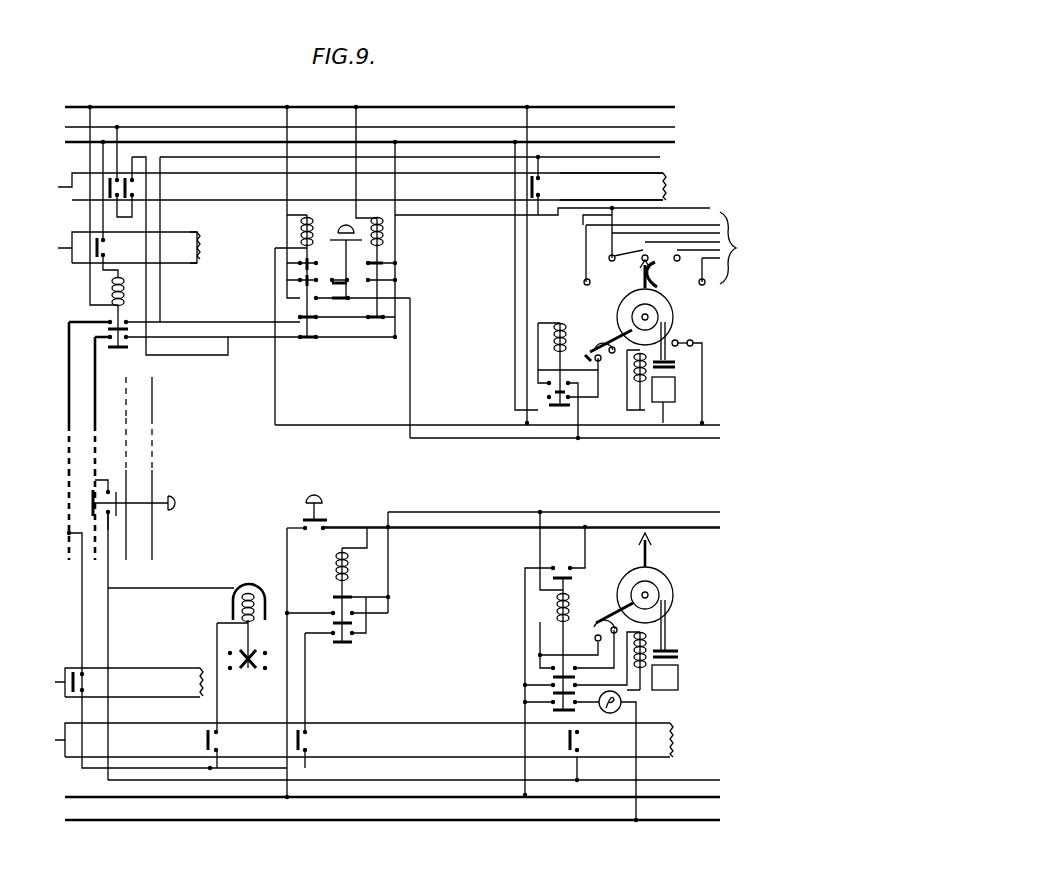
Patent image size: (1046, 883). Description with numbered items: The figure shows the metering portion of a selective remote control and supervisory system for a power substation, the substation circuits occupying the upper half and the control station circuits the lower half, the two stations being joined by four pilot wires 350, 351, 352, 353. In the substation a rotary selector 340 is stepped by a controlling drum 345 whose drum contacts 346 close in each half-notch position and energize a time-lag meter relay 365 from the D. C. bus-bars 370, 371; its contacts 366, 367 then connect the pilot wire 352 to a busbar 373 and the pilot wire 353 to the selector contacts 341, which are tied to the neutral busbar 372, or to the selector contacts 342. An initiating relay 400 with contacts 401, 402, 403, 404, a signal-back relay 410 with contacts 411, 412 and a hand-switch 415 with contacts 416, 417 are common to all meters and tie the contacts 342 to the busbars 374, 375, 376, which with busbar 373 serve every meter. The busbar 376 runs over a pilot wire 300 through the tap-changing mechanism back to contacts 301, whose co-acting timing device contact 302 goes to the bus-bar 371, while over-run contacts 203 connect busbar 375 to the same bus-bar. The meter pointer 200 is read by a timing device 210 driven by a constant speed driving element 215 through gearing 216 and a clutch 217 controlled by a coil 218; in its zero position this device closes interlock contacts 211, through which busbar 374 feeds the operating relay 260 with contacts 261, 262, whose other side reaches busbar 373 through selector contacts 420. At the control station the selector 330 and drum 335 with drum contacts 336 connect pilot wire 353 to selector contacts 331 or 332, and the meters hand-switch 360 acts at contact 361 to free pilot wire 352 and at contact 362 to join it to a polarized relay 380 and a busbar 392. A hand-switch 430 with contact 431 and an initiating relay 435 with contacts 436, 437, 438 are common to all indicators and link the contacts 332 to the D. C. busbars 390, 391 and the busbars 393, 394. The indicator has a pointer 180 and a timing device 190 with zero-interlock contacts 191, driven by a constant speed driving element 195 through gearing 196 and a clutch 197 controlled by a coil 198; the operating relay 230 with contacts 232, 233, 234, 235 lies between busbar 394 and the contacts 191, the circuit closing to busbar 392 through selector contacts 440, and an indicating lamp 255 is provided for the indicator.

The D. C. bus-bar 370 is at (500, 107).
The D. C. bus-bar 371 is at (500, 142).
The D. C. neutral busbar 372 is at (425, 127).
The busbar 373 is at (660, 157).
The busbar 374 is at (715, 438).
The busbar 375 is at (710, 425).
The busbar 376 is at (690, 190).
The selector 340 is at (222, 200).
The selector contacts 341 is at (110, 185).
The selector contacts 342 is at (127, 188).
The rotary controlling drum 345 is at (195, 258).
The drum contacts 346 is at (100, 246).
The time-lag meter relay 365 is at (112, 292).
The relay contact 366 is at (126, 327).
The relay contact 367 is at (122, 347).
The pilot wire 350 is at (152, 430).
The pilot wire 351 is at (128, 440).
The pilot wire 352 is at (100, 395).
The pilot wire 353 is at (70, 422).
The meters hand-switch 360 is at (177, 500).
The switch contact 361 is at (115, 508).
The switch contact 362 is at (110, 492).
The initiating relay 400 is at (300, 238).
The relay contact 401 is at (305, 322).
The relay contact 402 is at (318, 342).
The relay contact 403 is at (292, 268).
The relay contact 404 is at (300, 302).
The signal-back relay 410 is at (385, 232).
The relay contact 411 is at (375, 322).
The relay contact 412 is at (385, 262).
The hand-switch 415 is at (340, 232).
The hand-switch contact 416 is at (385, 280).
The hand-switch contact 417 is at (338, 300).
The selector contacts 420 is at (540, 188).
The pilot wires 300 is at (713, 234).
The contacts 301 is at (630, 258).
The timing device contact 302 is at (588, 347).
The meter pointer 200 is at (660, 302).
The over-run contacts 203 is at (678, 341).
The timing device 210 is at (605, 345).
The interlock contacts 211 is at (610, 346).
The constant speed driving element 215 is at (664, 390).
The gearing 216 is at (668, 312).
The clutch 217 is at (670, 365).
The coil 218 is at (637, 385).
The operating relay 260 is at (562, 322).
The relay contact 261 is at (550, 390).
The relay contact 262 is at (555, 398).
The hand-switch 430 is at (314, 497).
The hand-switch contact 431 is at (300, 520).
The initiating relay 435 is at (336, 567).
The relay contact 436 is at (345, 598).
The relay contact 437 is at (350, 624).
The relay contact 438 is at (340, 645).
The polarized relay 380 is at (240, 606).
The selector 330 is at (428, 745).
The selector contacts 331 is at (208, 738).
The selector contacts 332 is at (305, 740).
The rotary controlling drum 335 is at (165, 676).
The drum contacts 336 is at (84, 688).
The D. C. busbar 390 is at (445, 797).
The D. C. busbar 391 is at (500, 820).
The busbar 392 is at (712, 780).
The busbar 393 is at (680, 527).
The busbar 394 is at (715, 512).
The selector contacts 440 is at (572, 742).
The indicator pointer 180 is at (650, 558).
The timing device 190 is at (618, 612).
The zero-interlock contacts 191 is at (604, 625).
The constant speed driving element 195 is at (672, 678).
The gearing 196 is at (668, 602).
The clutch 197 is at (670, 653).
The coil 198 is at (650, 645).
The operating relay 230 is at (556, 610).
The relay contact 232 is at (553, 578).
The relay contact 233 is at (553, 677).
The relay contact 234 is at (553, 693).
The relay contact 235 is at (553, 710).
The indicating lamp 255 is at (622, 706).